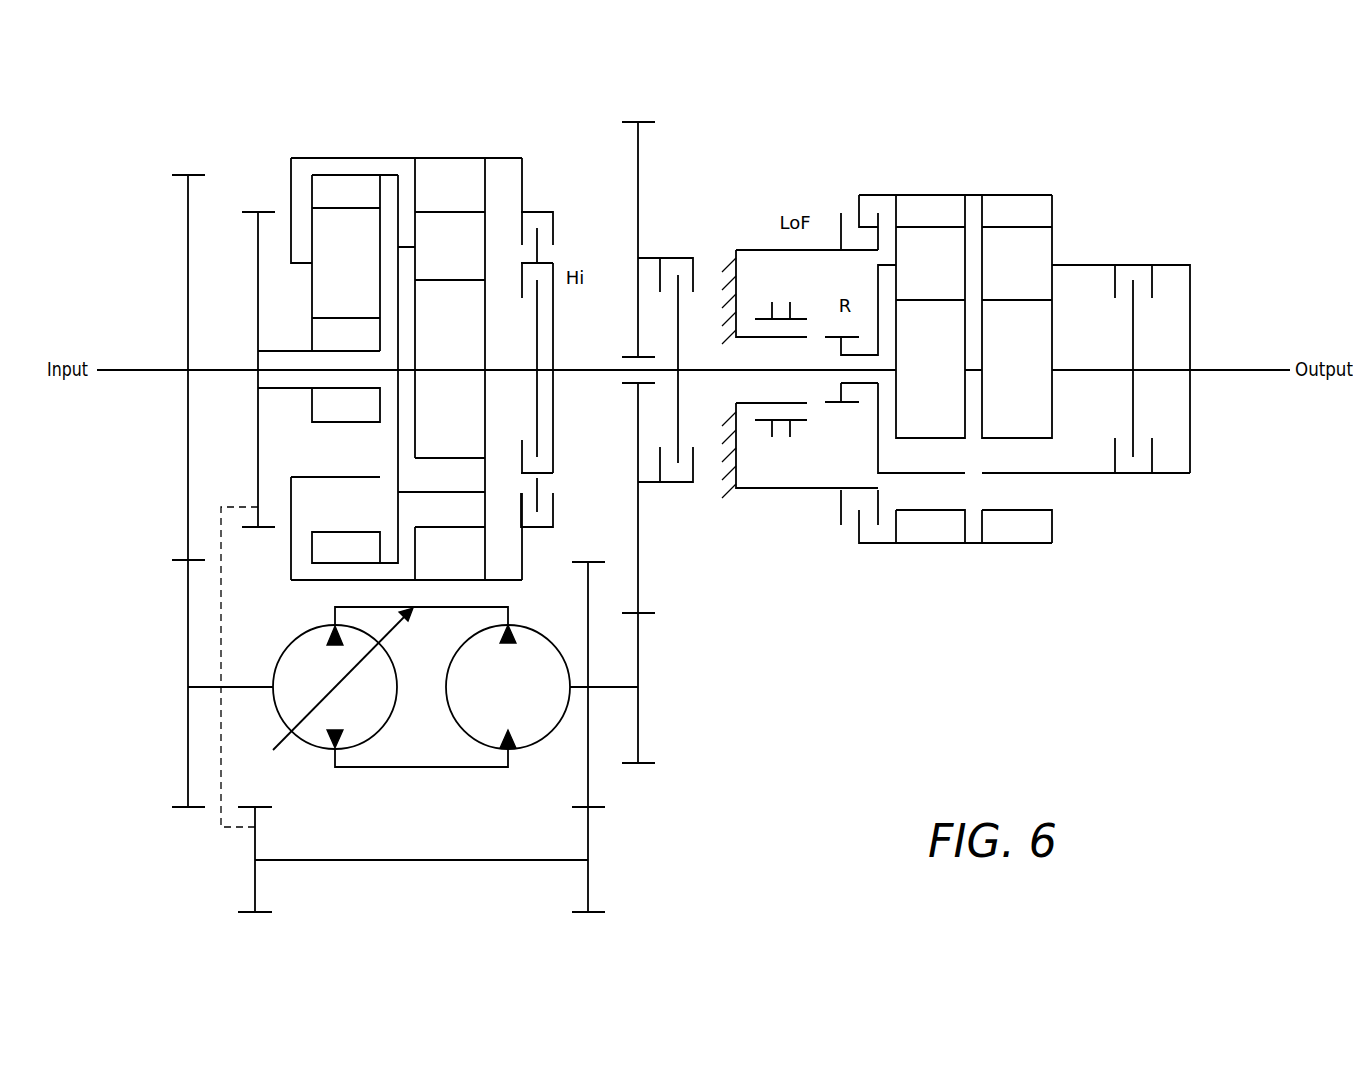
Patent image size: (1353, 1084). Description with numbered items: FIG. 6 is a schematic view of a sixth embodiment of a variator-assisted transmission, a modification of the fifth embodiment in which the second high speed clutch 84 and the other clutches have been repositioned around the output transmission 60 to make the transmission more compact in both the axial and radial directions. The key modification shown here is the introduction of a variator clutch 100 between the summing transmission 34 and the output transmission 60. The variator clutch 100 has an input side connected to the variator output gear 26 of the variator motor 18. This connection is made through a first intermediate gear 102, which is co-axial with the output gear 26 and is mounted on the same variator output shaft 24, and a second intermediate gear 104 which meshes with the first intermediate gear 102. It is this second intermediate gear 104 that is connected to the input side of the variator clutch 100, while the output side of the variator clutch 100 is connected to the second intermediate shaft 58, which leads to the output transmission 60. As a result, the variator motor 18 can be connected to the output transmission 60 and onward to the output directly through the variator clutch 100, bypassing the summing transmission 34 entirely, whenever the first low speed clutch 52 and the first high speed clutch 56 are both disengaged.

The summing transmission 34 is at (402, 143).
The first low speed clutch 52 is at (548, 212).
The first high speed clutch 56 is at (553, 510).
The second intermediate gear 104 is at (638, 162).
The first intermediate gear 102 is at (640, 653).
The variator clutch 100 is at (687, 257).
The second intermediate shaft 58 is at (707, 373).
The output transmission 60 is at (972, 190).
The second high speed clutch 84 is at (1143, 263).
The variator motor 18 is at (537, 745).
The variator output shaft 24 is at (618, 689).
The variator output gear 26 is at (590, 780).